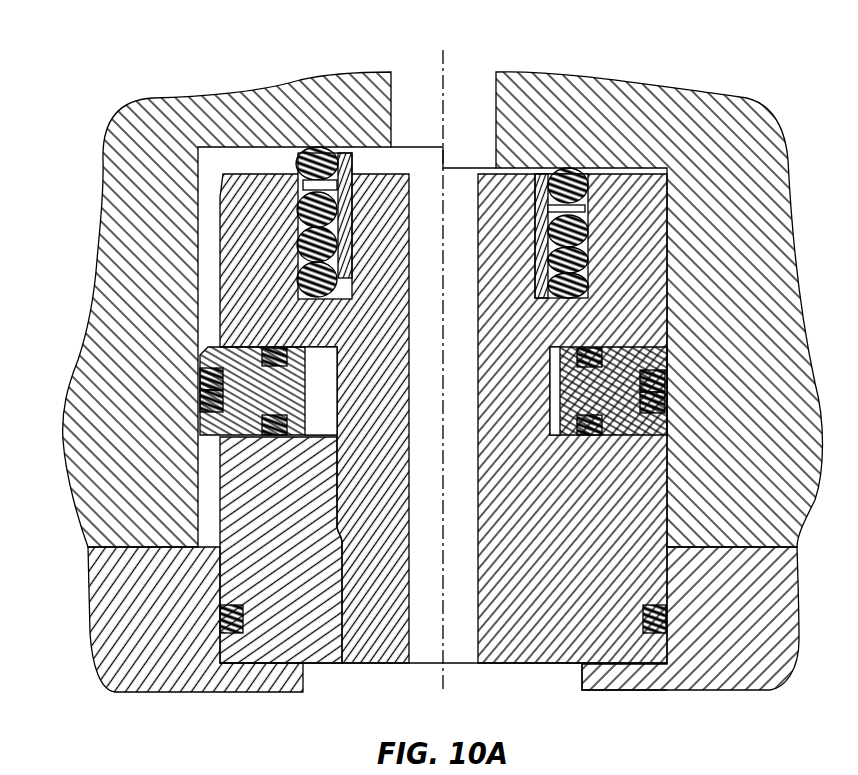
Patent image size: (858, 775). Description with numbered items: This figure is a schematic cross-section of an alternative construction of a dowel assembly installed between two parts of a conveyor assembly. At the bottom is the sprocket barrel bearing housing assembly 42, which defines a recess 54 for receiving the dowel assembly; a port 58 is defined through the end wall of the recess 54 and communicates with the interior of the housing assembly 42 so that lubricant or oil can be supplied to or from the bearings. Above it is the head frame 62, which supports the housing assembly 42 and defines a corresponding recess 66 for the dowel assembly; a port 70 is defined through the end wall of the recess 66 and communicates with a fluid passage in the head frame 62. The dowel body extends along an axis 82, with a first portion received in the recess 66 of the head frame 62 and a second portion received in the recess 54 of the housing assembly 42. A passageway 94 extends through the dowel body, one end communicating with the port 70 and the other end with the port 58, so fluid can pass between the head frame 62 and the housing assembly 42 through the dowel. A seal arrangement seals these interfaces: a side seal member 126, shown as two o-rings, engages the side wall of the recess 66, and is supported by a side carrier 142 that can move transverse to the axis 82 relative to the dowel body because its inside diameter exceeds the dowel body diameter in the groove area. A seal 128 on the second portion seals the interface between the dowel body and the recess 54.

The sprocket barrel bearing housing assembly 42 is at (737, 690).
The recess 54 is at (222, 575).
The port 58 is at (583, 672).
The head frame 62 is at (247, 115).
The recess 66 is at (200, 243).
The port 70 is at (393, 93).
The axis 82 is at (440, 642).
The passageway 94 is at (478, 635).
The side seal member 126 is at (202, 377).
The seal 128 is at (655, 633).
The side carrier 142 is at (208, 347).